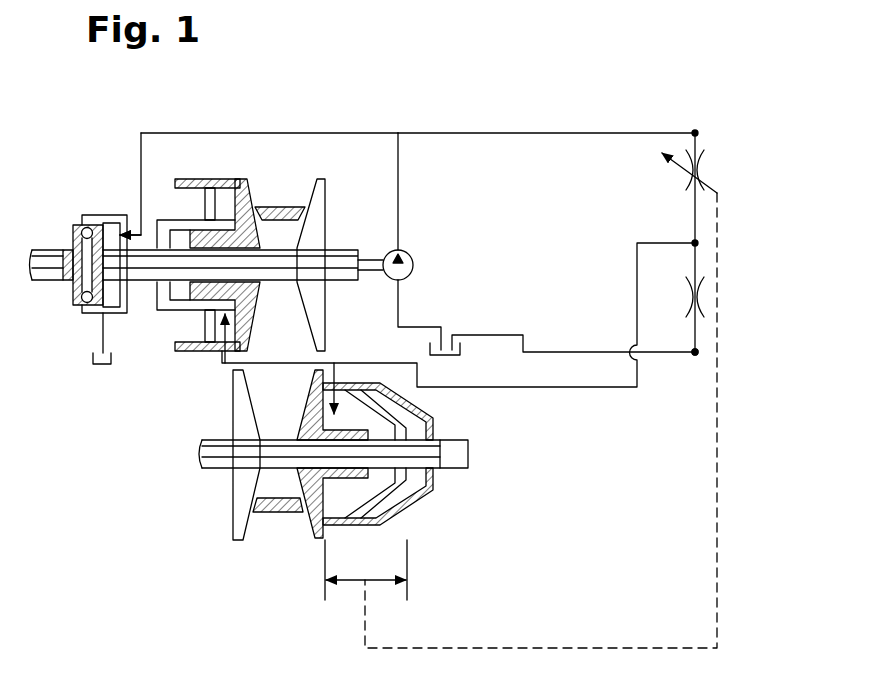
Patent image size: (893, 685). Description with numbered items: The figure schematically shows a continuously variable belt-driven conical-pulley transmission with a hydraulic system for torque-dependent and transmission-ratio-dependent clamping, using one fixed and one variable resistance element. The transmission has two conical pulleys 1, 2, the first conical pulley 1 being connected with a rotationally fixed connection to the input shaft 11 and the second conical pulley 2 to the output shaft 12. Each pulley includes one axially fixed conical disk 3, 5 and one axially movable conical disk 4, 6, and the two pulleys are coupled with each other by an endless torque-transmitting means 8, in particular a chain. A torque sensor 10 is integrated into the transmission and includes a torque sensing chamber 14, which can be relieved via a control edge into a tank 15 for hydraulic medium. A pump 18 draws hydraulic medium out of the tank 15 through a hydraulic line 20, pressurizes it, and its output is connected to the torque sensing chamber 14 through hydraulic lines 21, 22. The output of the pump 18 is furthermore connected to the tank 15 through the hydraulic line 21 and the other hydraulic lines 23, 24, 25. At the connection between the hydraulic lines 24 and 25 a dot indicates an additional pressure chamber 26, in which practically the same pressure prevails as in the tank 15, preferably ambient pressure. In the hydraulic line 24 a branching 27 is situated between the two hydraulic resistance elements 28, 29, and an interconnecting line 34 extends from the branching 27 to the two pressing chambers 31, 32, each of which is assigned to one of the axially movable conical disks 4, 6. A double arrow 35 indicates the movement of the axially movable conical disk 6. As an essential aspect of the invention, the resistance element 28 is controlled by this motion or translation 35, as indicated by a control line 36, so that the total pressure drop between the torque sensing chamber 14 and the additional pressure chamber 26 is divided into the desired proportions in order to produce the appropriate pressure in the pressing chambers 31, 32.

The conical pulley 1 is at (272, 250).
The conical pulley 2 is at (347, 448).
The axially fixed conical disk 3 is at (318, 202).
The axially movable conical disk 4 is at (247, 182).
The axially fixed conical disk 5 is at (240, 495).
The axially movable conical disk 6 is at (305, 520).
The endless torque-transmitting means 8 is at (275, 513).
The torque sensor 10 is at (98, 199).
The input shaft 11 is at (47, 281).
The output shaft 12 is at (468, 453).
The torque sensing chamber 14 is at (112, 295).
The tank 15 is at (452, 352).
The pump 18 is at (404, 266).
The hydraulic line 20 is at (400, 299).
The hydraulic line 21 is at (400, 182).
The hydraulic line 22 is at (274, 133).
The hydraulic line 23 is at (549, 133).
The hydraulic line 24 is at (695, 213).
The hydraulic line 25 is at (578, 352).
The additional pressure chamber 26 is at (700, 352).
The branching 27 is at (700, 243).
The hydraulic resistance element 28 is at (700, 165).
The hydraulic resistance element 29 is at (700, 308).
The pressing chamber 31 is at (225, 308).
The pressing chamber 32 is at (334, 420).
The interconnecting line 34 is at (370, 363).
The double arrow 35 is at (373, 580).
The control line 36 is at (538, 648).